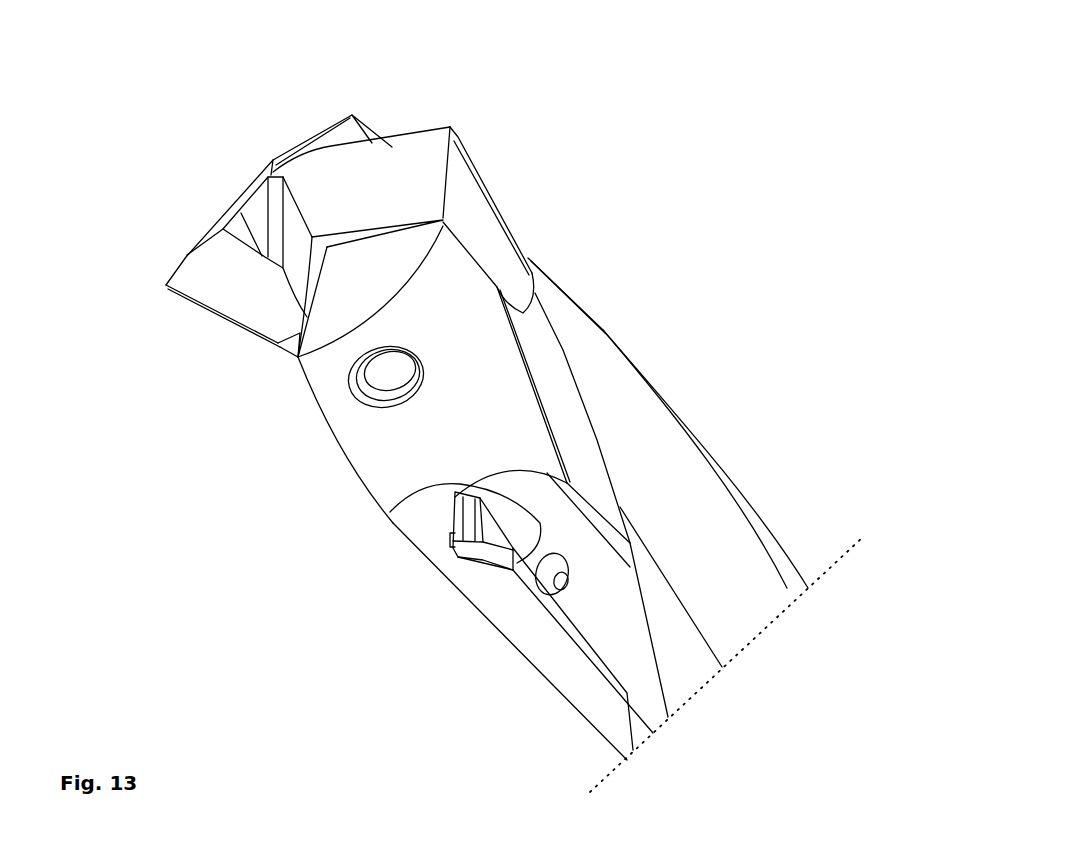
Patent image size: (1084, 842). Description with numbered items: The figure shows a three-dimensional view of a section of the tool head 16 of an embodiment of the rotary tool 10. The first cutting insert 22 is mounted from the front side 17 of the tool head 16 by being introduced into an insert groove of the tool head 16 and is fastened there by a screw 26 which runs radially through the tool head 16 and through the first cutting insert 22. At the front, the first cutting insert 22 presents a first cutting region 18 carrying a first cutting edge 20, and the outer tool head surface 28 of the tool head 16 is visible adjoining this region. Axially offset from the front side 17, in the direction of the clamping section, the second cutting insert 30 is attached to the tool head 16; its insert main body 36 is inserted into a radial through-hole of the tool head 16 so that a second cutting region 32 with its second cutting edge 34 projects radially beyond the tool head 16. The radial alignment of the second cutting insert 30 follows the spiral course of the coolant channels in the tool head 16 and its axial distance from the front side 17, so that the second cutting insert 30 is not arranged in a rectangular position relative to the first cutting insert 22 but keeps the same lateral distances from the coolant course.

The rotary tool 10 is at (732, 232).
The tool head 16 is at (555, 667).
The front side 17 is at (250, 150).
The first cutting region 18 is at (181, 267).
The first cutting edge 20 is at (187, 255).
The first cutting insert 22 is at (475, 218).
The screw 26 is at (381, 375).
The tool head surface 28 is at (657, 420).
The second cutting insert 30 is at (477, 570).
The second cutting region 32 is at (465, 588).
The second cutting edge 34 is at (483, 577).
The insert main body 36 is at (487, 500).